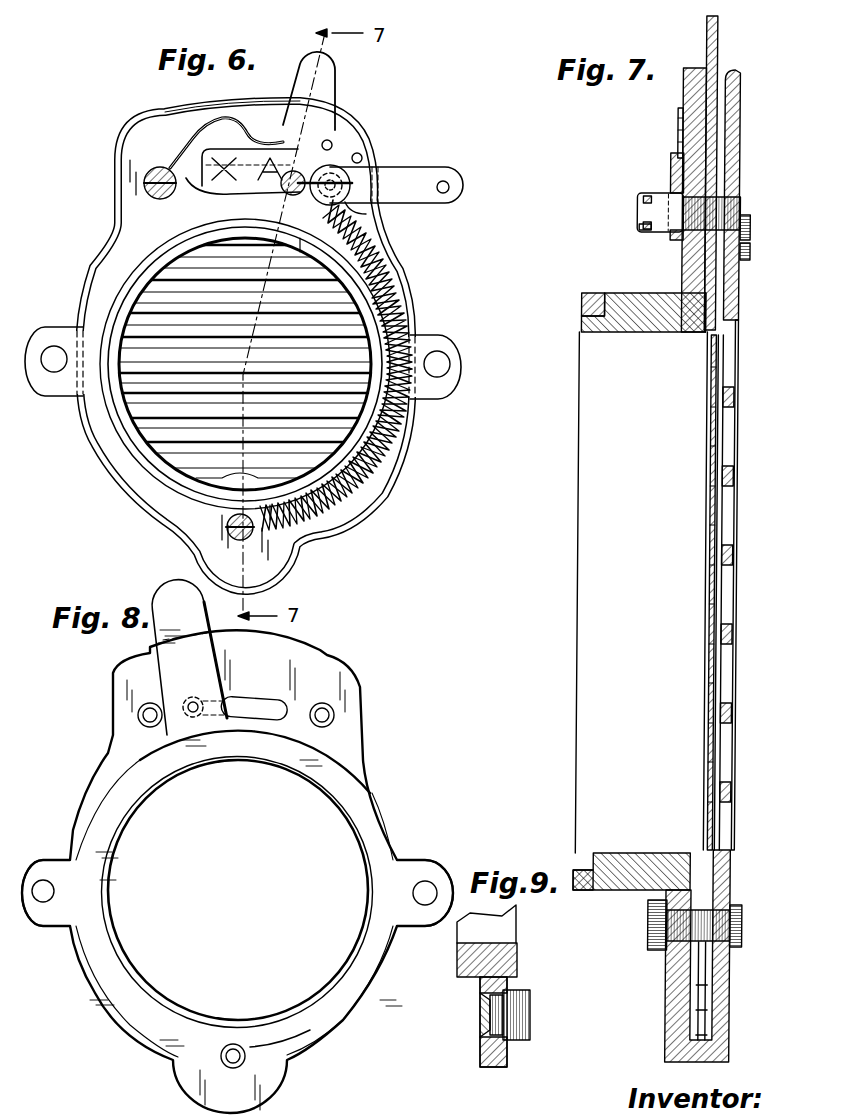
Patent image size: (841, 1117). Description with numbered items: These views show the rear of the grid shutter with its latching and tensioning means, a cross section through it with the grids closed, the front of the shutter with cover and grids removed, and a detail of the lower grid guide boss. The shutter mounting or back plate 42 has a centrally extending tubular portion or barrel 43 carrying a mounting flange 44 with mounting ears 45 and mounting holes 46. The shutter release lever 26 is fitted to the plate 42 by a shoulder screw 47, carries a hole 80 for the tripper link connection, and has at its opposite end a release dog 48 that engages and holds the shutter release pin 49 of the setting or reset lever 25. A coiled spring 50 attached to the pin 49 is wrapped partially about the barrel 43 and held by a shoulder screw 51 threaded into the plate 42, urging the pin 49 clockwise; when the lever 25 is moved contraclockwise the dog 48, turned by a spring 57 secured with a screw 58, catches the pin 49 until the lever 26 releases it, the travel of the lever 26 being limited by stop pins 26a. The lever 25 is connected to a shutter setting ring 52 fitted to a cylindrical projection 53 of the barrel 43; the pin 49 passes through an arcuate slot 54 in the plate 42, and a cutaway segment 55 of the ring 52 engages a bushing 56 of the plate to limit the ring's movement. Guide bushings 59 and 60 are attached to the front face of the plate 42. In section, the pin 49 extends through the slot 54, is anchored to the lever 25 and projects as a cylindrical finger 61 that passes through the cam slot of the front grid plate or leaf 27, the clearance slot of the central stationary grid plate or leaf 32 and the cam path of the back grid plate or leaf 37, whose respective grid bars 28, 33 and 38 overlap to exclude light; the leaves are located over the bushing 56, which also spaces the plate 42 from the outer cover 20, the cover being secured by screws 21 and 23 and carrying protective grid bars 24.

In FIG. 6, the outer cover 20 is at (396, 252).
In FIG. 7, the outer cover 20 is at (742, 146).
In FIG. 7, the screw 21 is at (742, 940).
In FIG. 7, the screw 23 is at (745, 260).
In FIG. 7, the grid bars 24 is at (737, 397).
In FIG. 6, the setting or reset lever 25 is at (337, 83).
In FIG. 8, the setting or reset lever 25 is at (163, 595).
In FIG. 7, the setting or reset lever 25 is at (719, 40).
In FIG. 6, the release lever 26 is at (438, 204).
In FIG. 7, the release lever 26 is at (672, 170).
In FIG. 6, the stop pins 26a is at (330, 142).
In FIG. 7, the front grid plate or leaf 27 is at (709, 1034).
In FIG. 6, the grid bars 28 is at (175, 277).
In FIG. 7, the grid bars 28 is at (723, 425).
In FIG. 7, the central stationary grid plate or leaf 32 is at (711, 1010).
In FIG. 6, the grid bars 33 is at (188, 263).
In FIG. 7, the grid bars 33 is at (716, 397).
In FIG. 7, the back grid plate or leaf 37 is at (709, 987).
In FIG. 6, the grid bars 38 is at (293, 253).
In FIG. 7, the grid bars 38 is at (712, 370).
In FIG. 6, the shutter mounting or back plate 42 is at (222, 105).
In FIG. 8, the shutter mounting or back plate 42 is at (352, 703).
In FIG. 7, the shutter mounting or back plate 42 is at (684, 88).
In FIG. 9, the shutter mounting or back plate 42 is at (490, 1055).
In FIG. 6, the tubular portion or barrel 43 is at (133, 437).
In FIG. 7, the tubular portion or barrel 43 is at (632, 327).
In FIG. 9, the tubular portion or barrel 43 is at (467, 970).
In FIG. 6, the mounting flange 44 is at (152, 250).
In FIG. 7, the mounting flange 44 is at (584, 303).
In FIG. 6, the mounting ears 45 is at (52, 336).
In FIG. 8, the mounting ears 45 is at (43, 862).
In FIG. 6, the mounting holes 46 is at (55, 372).
In FIG. 8, the mounting holes 46 is at (43, 900).
In FIG. 6, the shoulder screw 47 is at (372, 211).
In FIG. 6, the release dog 48 is at (220, 178).
In FIG. 6, the shutter release pin 49 is at (289, 172).
In FIG. 7, the shutter release pin 49 is at (638, 214).
In FIG. 6, the coiled spring 50 is at (382, 465).
In FIG. 7, the coiled spring 50 is at (650, 233).
In FIG. 6, the shoulder screw 51 is at (247, 542).
In FIG. 7, the shoulder screw 51 is at (653, 912).
In FIG. 8, the shutter setting ring 52 is at (360, 800).
In FIG. 7, the shutter setting ring 52 is at (695, 867).
In FIG. 8, the cylindrical projection 53 is at (162, 783).
In FIG. 7, the cylindrical projection 53 is at (688, 332).
In FIG. 6, the arcuate slot 54 is at (203, 180).
In FIG. 8, the arcuate slot 54 is at (265, 700).
In FIG. 8, the cutaway segment 55 is at (295, 1038).
In FIG. 8, the bushing 56 is at (230, 1068).
In FIG. 7, the bushing 56 is at (706, 960).
In FIG. 9, the bushing 56 is at (530, 1018).
In FIG. 6, the spring 57 is at (192, 140).
In FIG. 7, the spring 57 is at (678, 124).
In FIG. 6, the screw 58 is at (157, 170).
In FIG. 8, the guide bushing 59 is at (138, 716).
In FIG. 8, the guide bushing 60 is at (335, 720).
In FIG. 8, the cylindrical finger 61 is at (193, 697).
In FIG. 7, the cylindrical finger 61 is at (728, 210).
In FIG. 6, the hole 80 is at (449, 193).